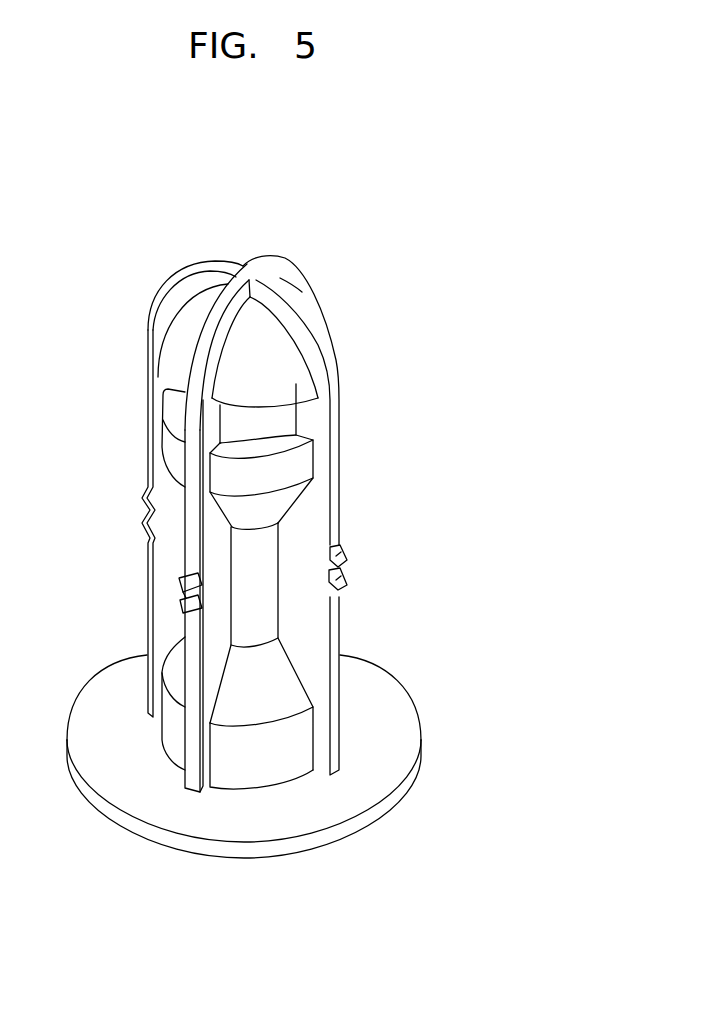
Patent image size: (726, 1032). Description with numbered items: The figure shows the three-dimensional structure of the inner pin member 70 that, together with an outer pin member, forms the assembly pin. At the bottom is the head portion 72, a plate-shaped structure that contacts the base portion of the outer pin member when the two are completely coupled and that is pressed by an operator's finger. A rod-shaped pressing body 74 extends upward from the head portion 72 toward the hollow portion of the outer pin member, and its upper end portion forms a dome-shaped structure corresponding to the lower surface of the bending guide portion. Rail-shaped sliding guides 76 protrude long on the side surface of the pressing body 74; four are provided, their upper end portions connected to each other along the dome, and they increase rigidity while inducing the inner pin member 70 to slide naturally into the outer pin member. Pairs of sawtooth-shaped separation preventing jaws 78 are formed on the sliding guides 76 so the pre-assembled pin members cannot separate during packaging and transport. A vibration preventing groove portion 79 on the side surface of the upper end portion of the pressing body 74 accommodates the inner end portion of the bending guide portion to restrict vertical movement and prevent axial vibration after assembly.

The inner pin member 70 is at (128, 275).
The head portion 72 is at (400, 725).
The pressing body 74 is at (285, 502).
The sliding guide 76 is at (337, 450).
The separation preventing jaw 78 is at (348, 586).
The vibration preventing groove portion 79 is at (304, 414).